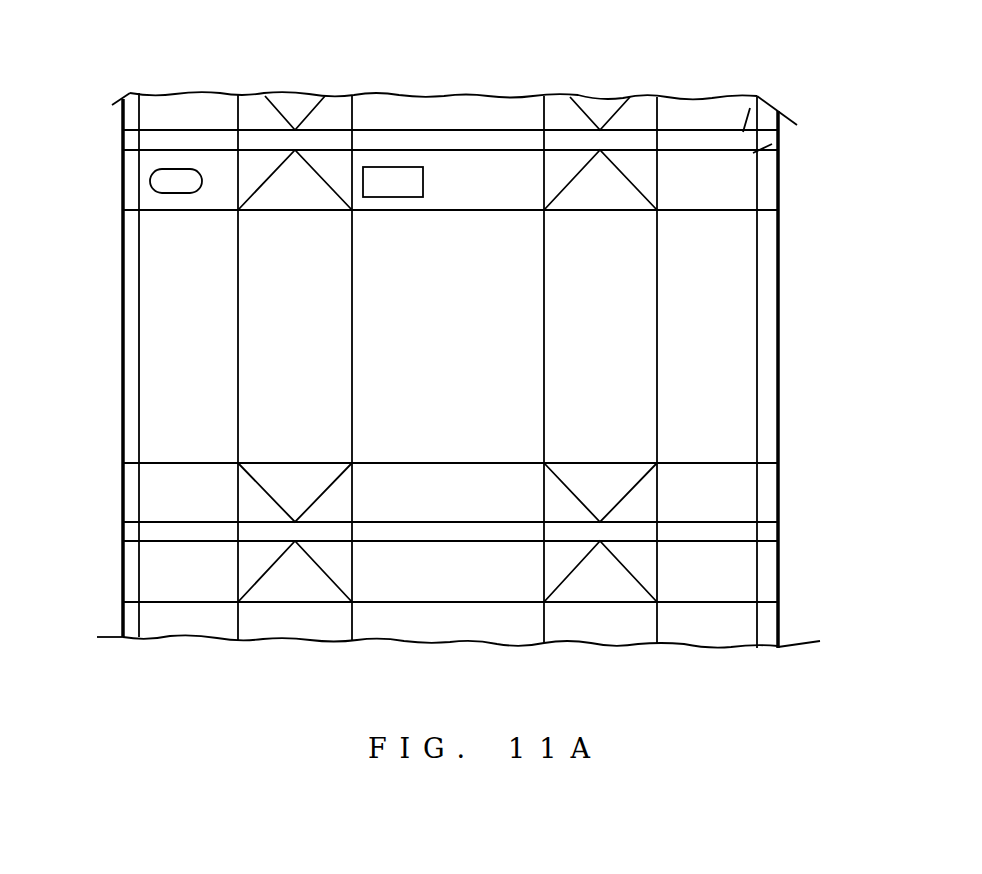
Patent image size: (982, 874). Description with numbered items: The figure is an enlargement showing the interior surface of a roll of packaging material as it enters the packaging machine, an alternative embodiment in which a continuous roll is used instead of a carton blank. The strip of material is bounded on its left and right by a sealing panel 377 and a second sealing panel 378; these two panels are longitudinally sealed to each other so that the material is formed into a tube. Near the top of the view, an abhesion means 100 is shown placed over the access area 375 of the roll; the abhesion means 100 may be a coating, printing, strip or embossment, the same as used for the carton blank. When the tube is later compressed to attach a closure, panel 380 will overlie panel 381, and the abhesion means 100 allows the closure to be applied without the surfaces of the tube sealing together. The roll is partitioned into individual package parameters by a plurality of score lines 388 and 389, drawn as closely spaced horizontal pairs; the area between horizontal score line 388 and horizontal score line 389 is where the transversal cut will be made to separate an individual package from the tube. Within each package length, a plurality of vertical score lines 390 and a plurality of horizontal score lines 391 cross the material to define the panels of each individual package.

The abhesion means 100 is at (393, 167).
The access area 375 is at (160, 181).
The sealing panel 377 is at (122, 253).
The second sealing panel 378 is at (778, 238).
The panel 380 is at (211, 162).
The panel 381 is at (483, 168).
The horizontal score line 388 is at (770, 92).
The horizontal score line 389 is at (780, 148).
The vertical score lines 390 is at (657, 302).
The horizontal score lines 391 is at (450, 210).